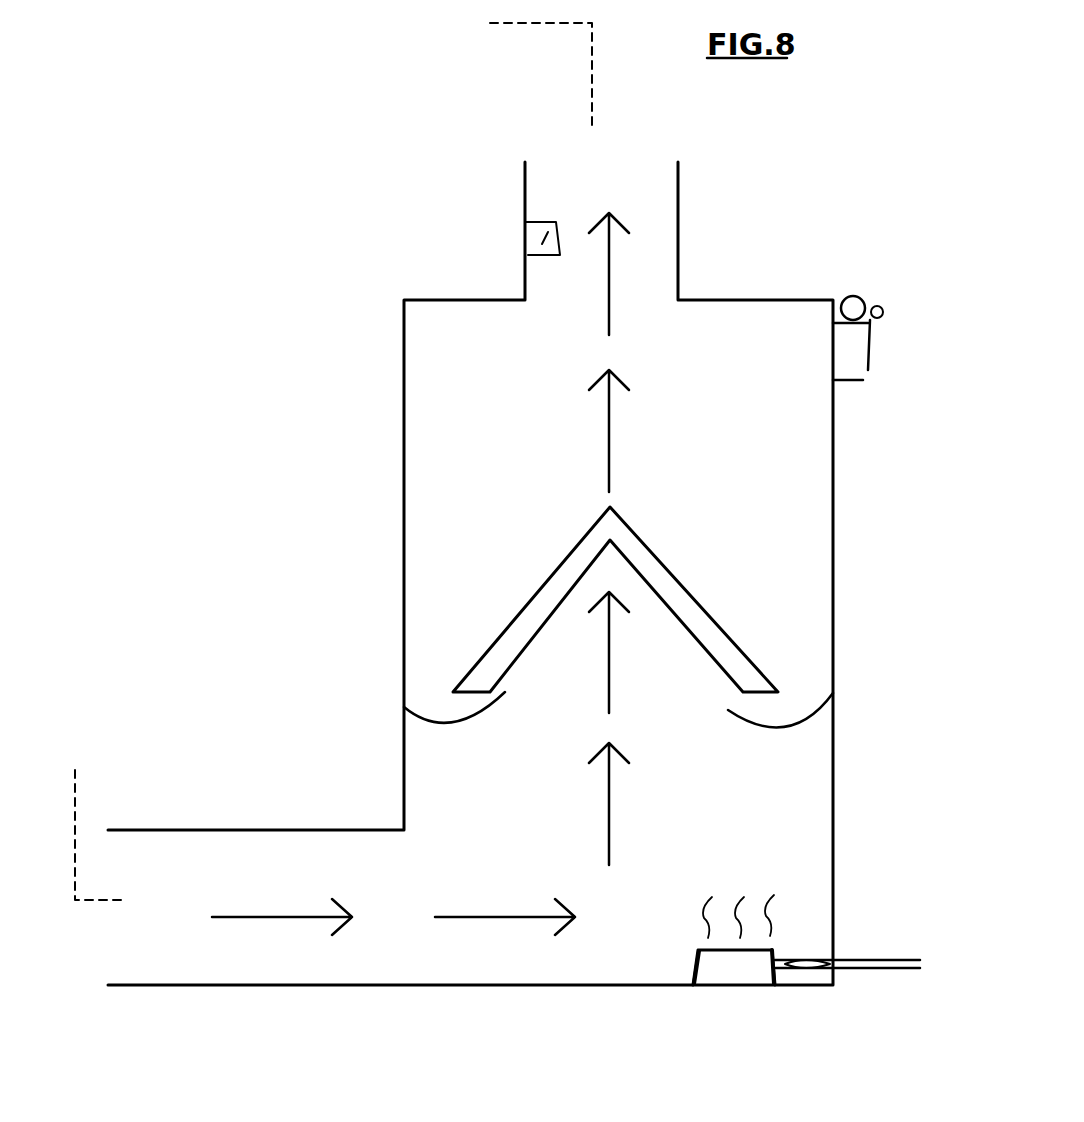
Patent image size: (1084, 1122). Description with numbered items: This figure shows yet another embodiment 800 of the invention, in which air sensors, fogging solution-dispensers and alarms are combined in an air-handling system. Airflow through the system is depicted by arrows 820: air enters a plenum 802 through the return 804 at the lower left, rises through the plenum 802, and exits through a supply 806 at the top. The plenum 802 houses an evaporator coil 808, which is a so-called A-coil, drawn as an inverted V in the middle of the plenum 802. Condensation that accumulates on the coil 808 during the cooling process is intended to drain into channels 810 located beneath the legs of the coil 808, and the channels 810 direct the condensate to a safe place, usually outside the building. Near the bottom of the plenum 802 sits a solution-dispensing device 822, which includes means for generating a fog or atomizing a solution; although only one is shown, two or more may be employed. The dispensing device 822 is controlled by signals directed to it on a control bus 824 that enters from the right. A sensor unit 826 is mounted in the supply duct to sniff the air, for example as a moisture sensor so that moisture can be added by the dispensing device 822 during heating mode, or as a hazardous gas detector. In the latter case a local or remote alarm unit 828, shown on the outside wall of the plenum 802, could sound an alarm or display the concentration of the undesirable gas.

The embodiment 800 is at (516, 1091).
The plenum 802 is at (403, 530).
The return 804 is at (83, 813).
The supply 806 is at (502, 67).
The evaporator coil 808 is at (708, 592).
The channels 810 is at (430, 725).
The arrows 820 is at (443, 585).
The solution-dispensing device 822 is at (722, 970).
The control bus 824 is at (872, 960).
The sensor unit 826 is at (540, 228).
The alarm unit 828 is at (870, 368).